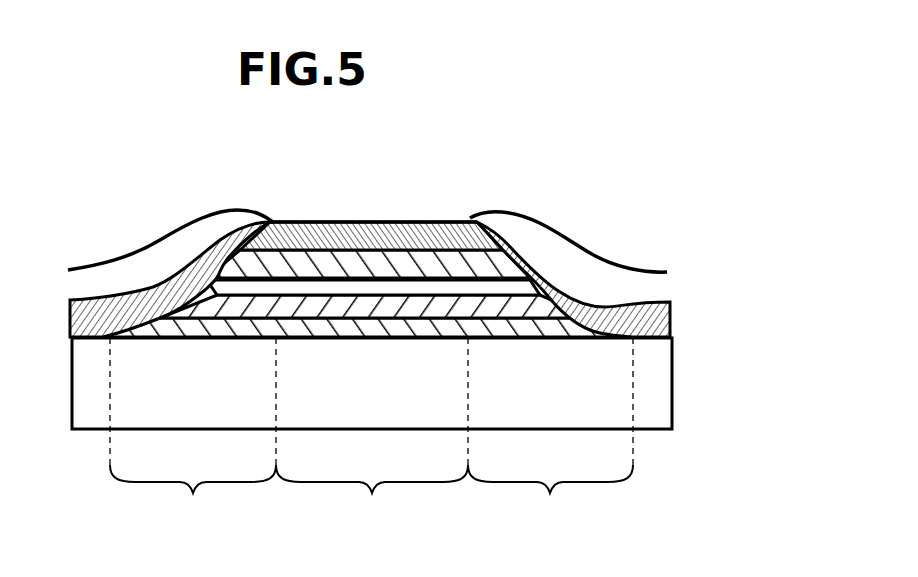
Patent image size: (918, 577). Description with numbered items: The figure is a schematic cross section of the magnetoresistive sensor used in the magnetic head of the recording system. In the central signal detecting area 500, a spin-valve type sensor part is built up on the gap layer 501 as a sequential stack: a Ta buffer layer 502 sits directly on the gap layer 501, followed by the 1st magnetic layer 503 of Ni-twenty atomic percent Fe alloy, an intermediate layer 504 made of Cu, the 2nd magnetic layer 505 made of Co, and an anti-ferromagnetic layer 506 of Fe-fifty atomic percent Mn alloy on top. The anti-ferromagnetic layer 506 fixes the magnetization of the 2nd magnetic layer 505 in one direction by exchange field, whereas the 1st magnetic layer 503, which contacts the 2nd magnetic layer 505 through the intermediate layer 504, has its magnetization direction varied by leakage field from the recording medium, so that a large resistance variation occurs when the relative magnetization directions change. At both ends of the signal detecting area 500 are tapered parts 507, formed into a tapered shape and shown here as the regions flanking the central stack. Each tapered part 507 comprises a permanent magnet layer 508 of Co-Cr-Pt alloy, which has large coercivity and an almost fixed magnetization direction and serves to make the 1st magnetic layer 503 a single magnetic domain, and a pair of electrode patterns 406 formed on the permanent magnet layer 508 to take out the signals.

The gap layer 501 is at (650, 378).
The Ta buffer layer 502 is at (440, 228).
The 1st magnetic layer 503 is at (403, 330).
The intermediate layer 504 is at (370, 303).
The 2nd magnetic layer 505 is at (333, 283).
The anti-ferromagnetic layer 506 is at (295, 233).
The tapered parts 507 is at (371, 431).
The signal detecting area 500 is at (372, 494).
The permanent magnet layer 508 is at (160, 283).
The electrode patterns 406 is at (190, 250).